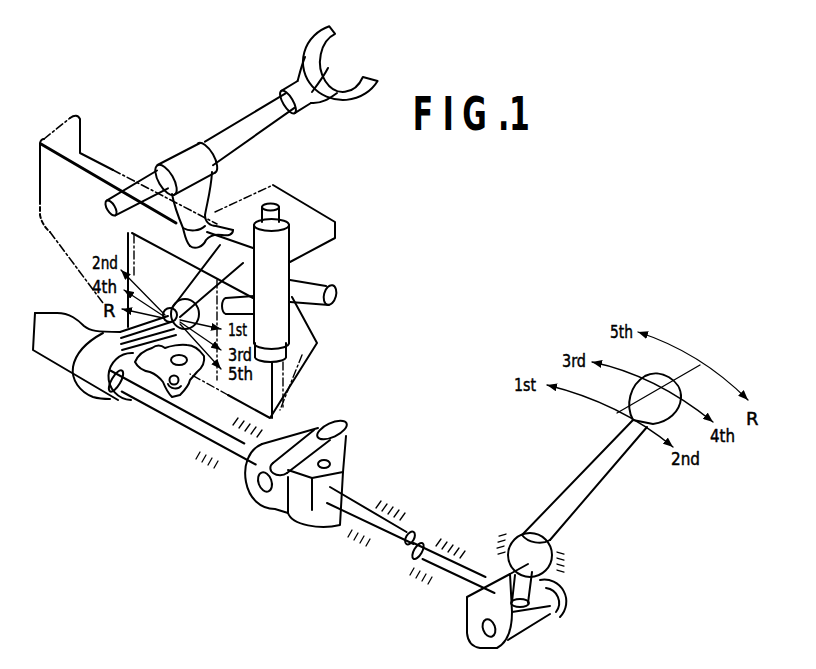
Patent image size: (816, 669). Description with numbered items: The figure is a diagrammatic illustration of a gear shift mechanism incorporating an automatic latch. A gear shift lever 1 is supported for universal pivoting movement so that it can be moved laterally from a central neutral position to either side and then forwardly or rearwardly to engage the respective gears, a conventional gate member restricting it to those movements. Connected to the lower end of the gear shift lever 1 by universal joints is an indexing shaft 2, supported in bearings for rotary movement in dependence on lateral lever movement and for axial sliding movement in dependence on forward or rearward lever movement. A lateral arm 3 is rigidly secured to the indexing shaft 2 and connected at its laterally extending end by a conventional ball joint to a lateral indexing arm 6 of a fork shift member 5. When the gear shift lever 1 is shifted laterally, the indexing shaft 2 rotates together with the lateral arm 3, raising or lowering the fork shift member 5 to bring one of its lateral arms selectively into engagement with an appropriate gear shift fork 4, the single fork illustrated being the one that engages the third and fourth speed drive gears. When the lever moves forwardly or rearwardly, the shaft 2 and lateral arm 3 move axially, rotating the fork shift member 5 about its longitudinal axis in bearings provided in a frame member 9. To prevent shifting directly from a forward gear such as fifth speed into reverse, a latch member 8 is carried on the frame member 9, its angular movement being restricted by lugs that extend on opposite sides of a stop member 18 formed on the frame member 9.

The gear shift lever 1 is at (587, 490).
The indexing shaft 2 is at (198, 432).
The lateral arm 3 is at (77, 367).
The gear shift fork 4 is at (347, 96).
The fork shift member 5 is at (291, 315).
The lateral indexing arm 6 is at (202, 297).
The latch member 8 is at (160, 380).
The frame member 9 is at (290, 405).
The stop member 18 is at (172, 382).